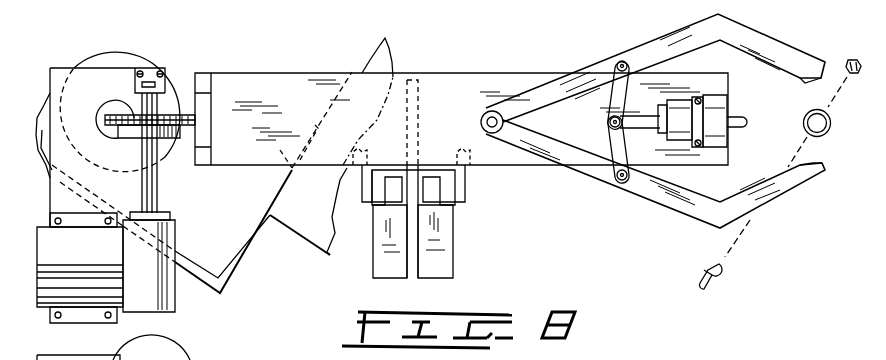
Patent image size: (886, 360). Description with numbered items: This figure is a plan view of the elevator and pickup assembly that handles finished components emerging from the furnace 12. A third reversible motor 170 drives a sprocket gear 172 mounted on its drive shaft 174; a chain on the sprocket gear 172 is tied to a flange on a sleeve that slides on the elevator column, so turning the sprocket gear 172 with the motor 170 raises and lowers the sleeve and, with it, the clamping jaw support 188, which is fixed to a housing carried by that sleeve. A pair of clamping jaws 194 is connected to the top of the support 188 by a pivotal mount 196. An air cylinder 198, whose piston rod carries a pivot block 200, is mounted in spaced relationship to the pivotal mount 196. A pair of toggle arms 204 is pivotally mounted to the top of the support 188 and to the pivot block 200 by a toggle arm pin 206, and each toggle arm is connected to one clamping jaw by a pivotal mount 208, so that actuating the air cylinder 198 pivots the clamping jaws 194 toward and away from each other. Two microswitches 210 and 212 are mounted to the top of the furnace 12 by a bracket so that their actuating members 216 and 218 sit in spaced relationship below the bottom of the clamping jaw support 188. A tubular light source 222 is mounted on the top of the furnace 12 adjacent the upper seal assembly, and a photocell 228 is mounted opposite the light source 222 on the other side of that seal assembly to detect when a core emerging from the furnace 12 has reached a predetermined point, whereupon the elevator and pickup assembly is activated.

The furnace 12 is at (318, 236).
The third reversible motor 170 is at (163, 303).
The sprocket gear 172 is at (165, 126).
The drive shaft 174 is at (160, 203).
The clamping jaw support 188 is at (277, 82).
The clamping jaws 194 is at (533, 97).
The pivotal mount 196 is at (482, 120).
The air cylinder 198 is at (722, 112).
The pivot block 200 is at (625, 130).
The toggle arms 204 is at (613, 83).
The toggle arm pin 206 is at (610, 121).
The pivotal mount 208 is at (622, 61).
The microswitch 210 is at (455, 263).
The microswitch 212 is at (383, 263).
The actuating member 216 is at (470, 156).
The actuating member 218 is at (300, 160).
The tubular light source 222 is at (720, 277).
The photocell 228 is at (848, 62).